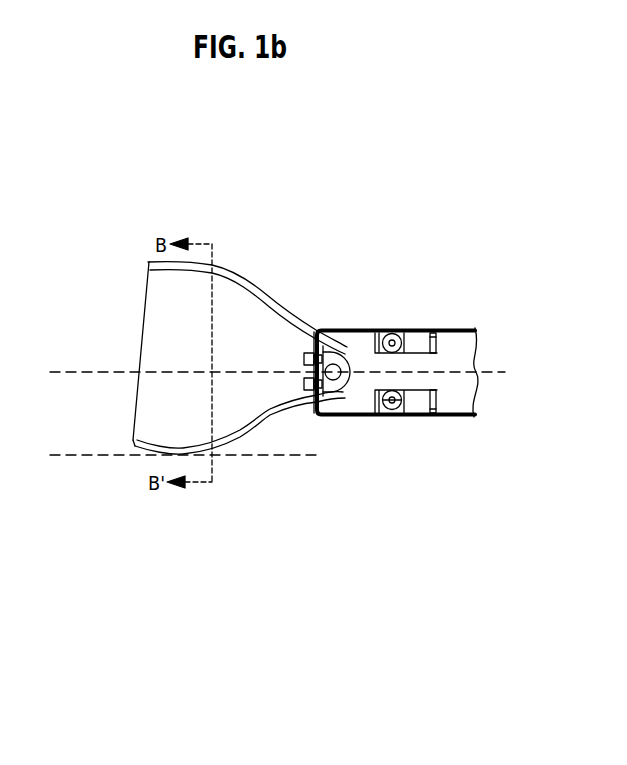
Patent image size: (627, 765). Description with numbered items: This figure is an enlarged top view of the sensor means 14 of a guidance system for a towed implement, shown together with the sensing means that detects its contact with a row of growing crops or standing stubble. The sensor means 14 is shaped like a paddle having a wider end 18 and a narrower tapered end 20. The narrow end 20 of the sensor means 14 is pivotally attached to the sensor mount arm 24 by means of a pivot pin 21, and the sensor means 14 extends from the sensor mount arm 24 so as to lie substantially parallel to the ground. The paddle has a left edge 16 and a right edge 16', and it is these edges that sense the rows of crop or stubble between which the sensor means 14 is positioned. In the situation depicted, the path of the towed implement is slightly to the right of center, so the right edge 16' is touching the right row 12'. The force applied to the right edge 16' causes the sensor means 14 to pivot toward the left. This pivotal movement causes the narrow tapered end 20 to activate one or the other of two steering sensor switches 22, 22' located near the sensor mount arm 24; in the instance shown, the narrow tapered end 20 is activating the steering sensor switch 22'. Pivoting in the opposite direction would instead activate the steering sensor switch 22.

The right row 12' is at (277, 472).
The sensor means 14 is at (241, 285).
The left edge 16 is at (110, 322).
The right edge 16' is at (95, 479).
The wider end 18 is at (238, 303).
The narrower tapered end 20 is at (360, 383).
The pivot pin 21 is at (335, 371).
The steering sensor switch 22 is at (403, 254).
The steering sensor switch 22' is at (382, 493).
The sensor mount arm 24 is at (455, 338).